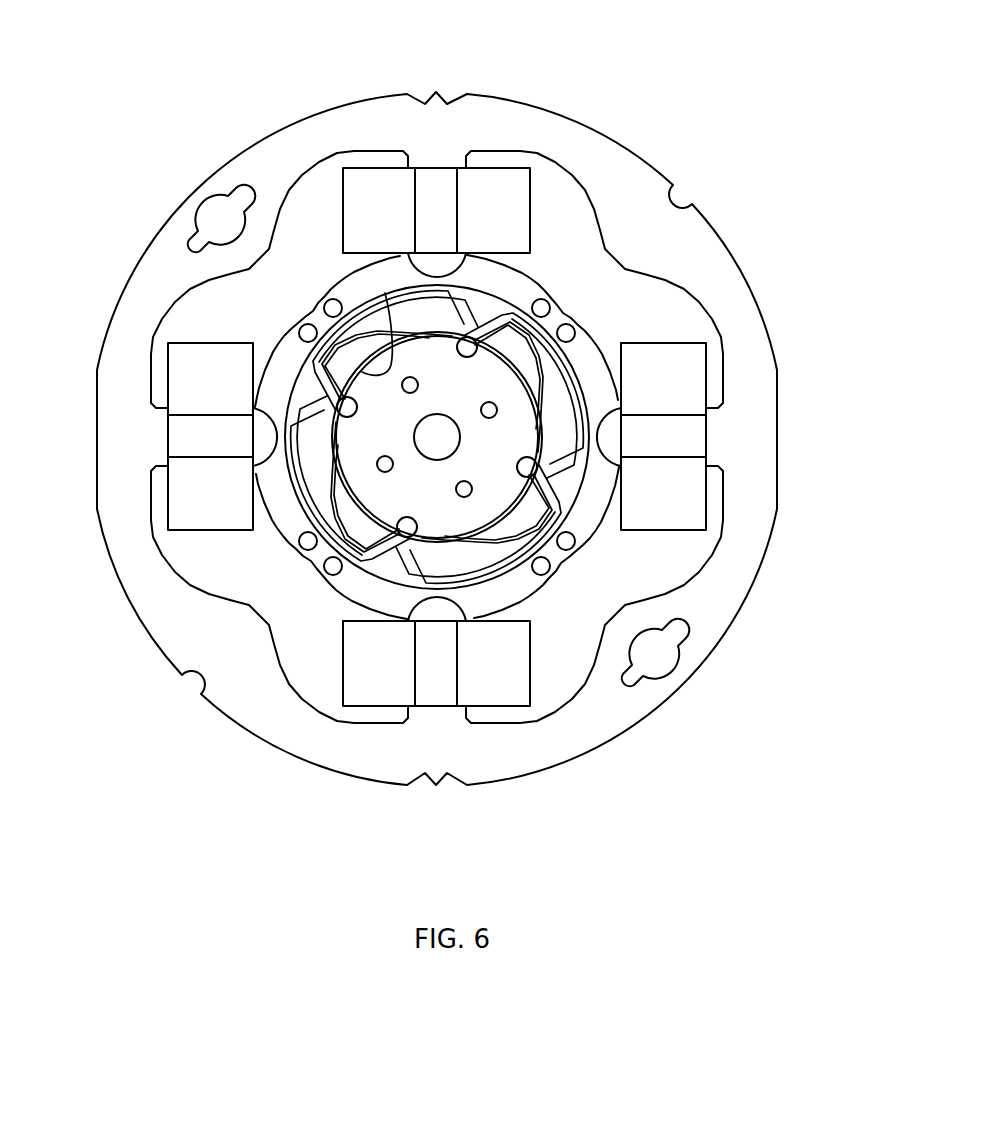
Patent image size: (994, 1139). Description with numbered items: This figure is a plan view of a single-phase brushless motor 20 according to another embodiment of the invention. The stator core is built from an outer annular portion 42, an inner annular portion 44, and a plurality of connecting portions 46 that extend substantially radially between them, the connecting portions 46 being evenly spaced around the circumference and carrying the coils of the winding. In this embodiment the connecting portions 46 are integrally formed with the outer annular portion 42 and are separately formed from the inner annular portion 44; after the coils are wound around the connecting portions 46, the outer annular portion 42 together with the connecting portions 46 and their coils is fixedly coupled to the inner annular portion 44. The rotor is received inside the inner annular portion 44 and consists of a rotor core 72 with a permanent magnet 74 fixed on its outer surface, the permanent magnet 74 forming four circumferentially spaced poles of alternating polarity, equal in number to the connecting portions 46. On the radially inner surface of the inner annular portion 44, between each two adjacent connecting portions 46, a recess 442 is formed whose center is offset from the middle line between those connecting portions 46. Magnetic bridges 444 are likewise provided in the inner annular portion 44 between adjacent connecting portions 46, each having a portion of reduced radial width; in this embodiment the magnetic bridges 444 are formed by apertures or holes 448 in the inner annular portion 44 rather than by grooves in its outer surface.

The motor assembly 20 is at (171, 110).
The outer annular portion 42 is at (295, 152).
The connecting portions 46 is at (440, 158).
The inner annular portion 44 is at (585, 365).
The apertures/holes 448 is at (541, 307).
The magnetic bridges 444 is at (548, 330).
The recess 442 is at (362, 372).
The rotor core 72 is at (347, 450).
The permanent magnet 74 is at (331, 518).